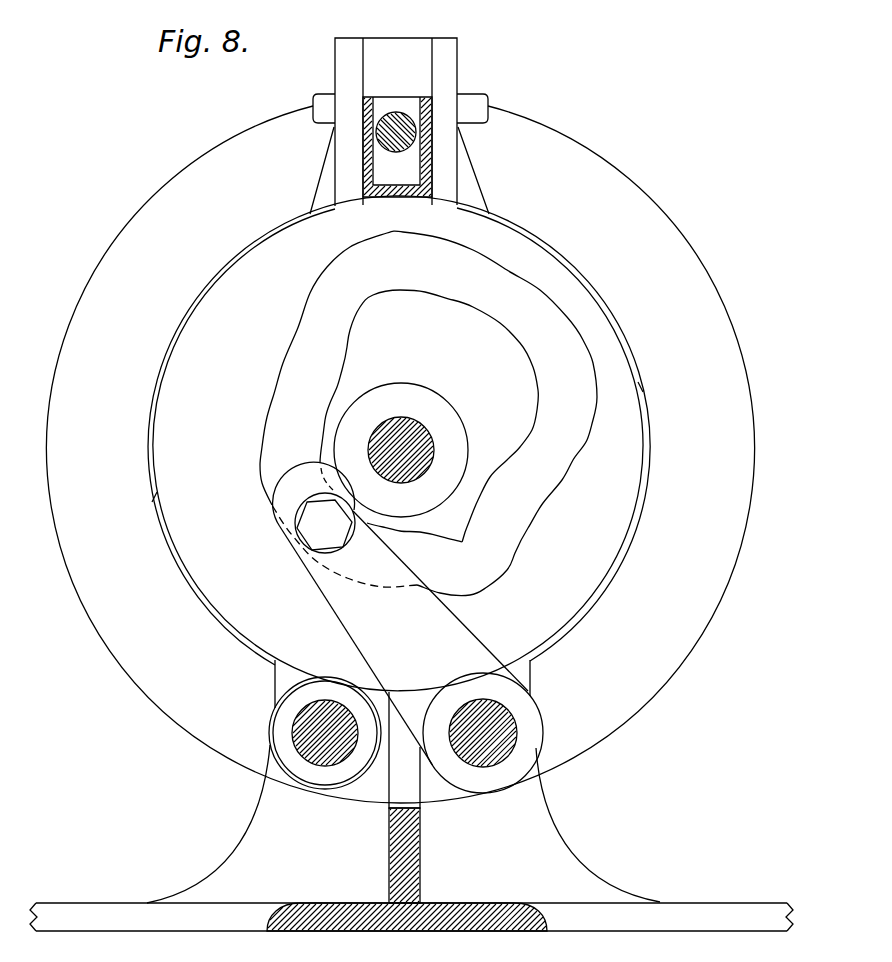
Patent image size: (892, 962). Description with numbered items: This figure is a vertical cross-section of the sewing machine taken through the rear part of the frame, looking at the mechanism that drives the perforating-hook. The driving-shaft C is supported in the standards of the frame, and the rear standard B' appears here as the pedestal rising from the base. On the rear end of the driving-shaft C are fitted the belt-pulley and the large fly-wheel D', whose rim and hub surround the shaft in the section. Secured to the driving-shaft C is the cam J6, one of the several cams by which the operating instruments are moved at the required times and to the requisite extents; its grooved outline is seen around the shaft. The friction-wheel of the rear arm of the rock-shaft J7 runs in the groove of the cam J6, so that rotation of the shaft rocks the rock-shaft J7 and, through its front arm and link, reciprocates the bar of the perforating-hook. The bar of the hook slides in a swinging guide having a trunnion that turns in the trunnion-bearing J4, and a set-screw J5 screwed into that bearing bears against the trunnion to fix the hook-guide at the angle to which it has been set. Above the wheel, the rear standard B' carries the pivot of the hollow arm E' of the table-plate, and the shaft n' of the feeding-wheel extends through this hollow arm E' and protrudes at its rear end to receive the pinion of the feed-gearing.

The rear standard B' is at (399, 126).
The feed-wheel shaft n' is at (396, 123).
The arm of the table-plate E' is at (397, 147).
The fly-wheel D' is at (401, 454).
The driving-shaft C is at (401, 450).
The cam J6 is at (428, 413).
The rock-shaft J7 is at (400, 613).
The trunnion-bearing J4 is at (325, 733).
The set-screw J5 is at (483, 733).